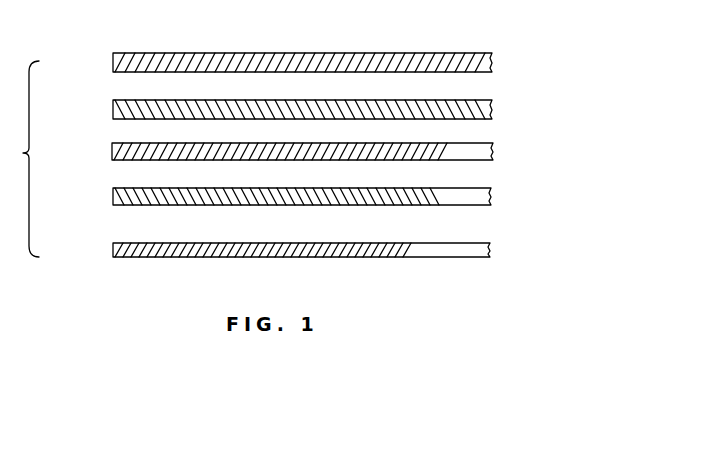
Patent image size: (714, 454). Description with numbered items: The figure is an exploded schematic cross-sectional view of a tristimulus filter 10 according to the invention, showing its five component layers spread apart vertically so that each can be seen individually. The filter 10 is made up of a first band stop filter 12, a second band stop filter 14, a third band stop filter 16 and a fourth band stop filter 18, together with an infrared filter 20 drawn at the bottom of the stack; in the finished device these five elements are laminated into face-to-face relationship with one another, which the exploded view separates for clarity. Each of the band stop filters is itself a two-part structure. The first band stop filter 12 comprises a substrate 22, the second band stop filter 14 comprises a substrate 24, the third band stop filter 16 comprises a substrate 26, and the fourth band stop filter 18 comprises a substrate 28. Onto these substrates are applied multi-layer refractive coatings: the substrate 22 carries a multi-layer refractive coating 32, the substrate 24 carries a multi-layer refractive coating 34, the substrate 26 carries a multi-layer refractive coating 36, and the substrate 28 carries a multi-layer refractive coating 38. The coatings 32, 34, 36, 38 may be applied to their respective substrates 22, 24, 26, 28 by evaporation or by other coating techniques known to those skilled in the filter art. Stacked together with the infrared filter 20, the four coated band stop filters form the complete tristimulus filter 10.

The tristimulus filter 10 is at (19, 159).
The first band stop filter 12 is at (533, 49).
The second band stop filter 14 is at (518, 104).
The third band stop filter 16 is at (518, 147).
The fourth band stop filter 18 is at (510, 193).
The infrared filter 20 is at (485, 246).
The substrate 22 is at (113, 59).
The substrate 24 is at (113, 111).
The substrate 26 is at (111, 148).
The substrate 28 is at (112, 196).
The multi-layer refractive coating 32 is at (415, 53).
The multi-layer refractive coating 34 is at (463, 100).
The multi-layer refractive coating 36 is at (472, 143).
The multi-layer refractive coating 38 is at (473, 188).